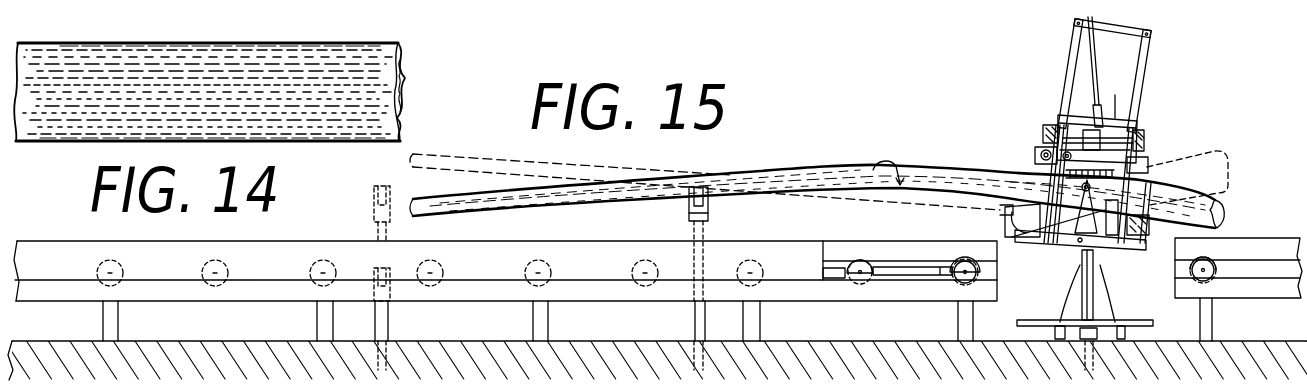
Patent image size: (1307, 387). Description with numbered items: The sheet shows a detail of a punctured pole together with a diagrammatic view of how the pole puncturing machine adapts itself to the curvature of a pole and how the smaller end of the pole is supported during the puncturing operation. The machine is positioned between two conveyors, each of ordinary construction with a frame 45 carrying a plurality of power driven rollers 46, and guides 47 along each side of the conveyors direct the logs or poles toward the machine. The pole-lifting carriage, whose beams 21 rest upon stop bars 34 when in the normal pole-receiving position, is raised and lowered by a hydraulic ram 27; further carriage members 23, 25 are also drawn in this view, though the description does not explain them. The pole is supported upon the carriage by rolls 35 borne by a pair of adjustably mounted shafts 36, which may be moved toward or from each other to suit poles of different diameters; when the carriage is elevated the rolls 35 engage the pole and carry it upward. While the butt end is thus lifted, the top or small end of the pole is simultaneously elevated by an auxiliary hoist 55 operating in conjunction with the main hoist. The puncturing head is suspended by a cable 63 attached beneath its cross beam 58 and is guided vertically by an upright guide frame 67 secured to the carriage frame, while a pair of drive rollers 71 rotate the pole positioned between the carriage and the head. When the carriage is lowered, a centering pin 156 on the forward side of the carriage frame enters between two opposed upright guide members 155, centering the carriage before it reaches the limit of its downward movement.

The beams 21 is at (1060, 242).
The upright posts 23 is at (1052, 238).
The carriage plate 25 is at (1045, 238).
The ram 27 is at (1095, 263).
The stop bars 34 is at (1130, 320).
The rolls 35 is at (1015, 185).
The shafts 36 is at (1006, 229).
The frame 45 is at (838, 302).
The power driven rollers 46 is at (440, 267).
The guides 47 is at (745, 245).
The auxiliary hoist 55 is at (373, 217).
The cross beam 58 is at (1115, 96).
The cable 63 is at (1090, 50).
The upright guide frame 67 is at (1148, 62).
The drive rollers 71 is at (1044, 130).
The upright guide members 155 is at (1103, 277).
The centering pin 156 is at (1082, 253).